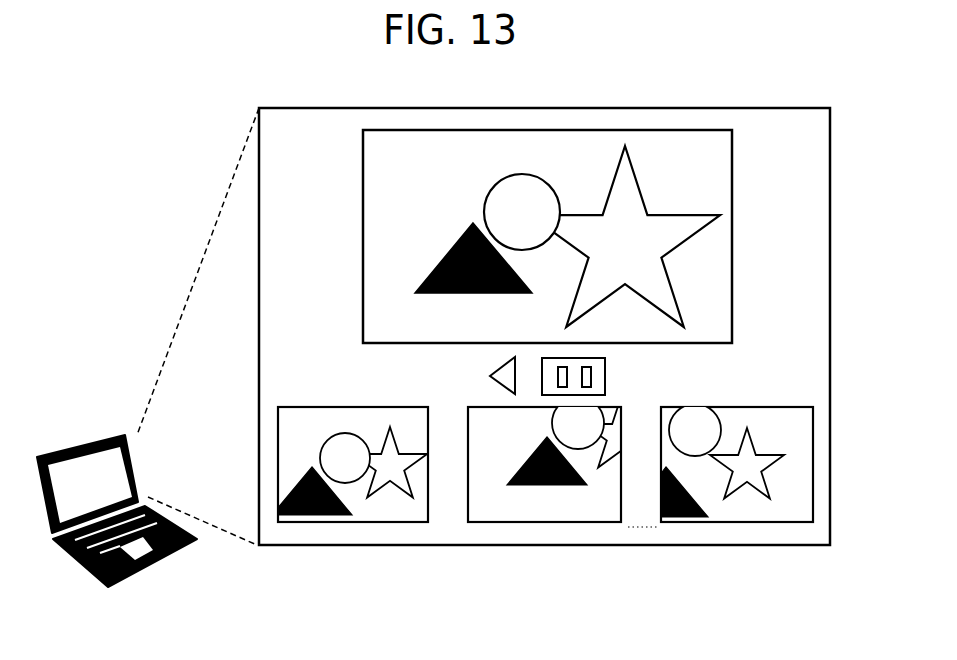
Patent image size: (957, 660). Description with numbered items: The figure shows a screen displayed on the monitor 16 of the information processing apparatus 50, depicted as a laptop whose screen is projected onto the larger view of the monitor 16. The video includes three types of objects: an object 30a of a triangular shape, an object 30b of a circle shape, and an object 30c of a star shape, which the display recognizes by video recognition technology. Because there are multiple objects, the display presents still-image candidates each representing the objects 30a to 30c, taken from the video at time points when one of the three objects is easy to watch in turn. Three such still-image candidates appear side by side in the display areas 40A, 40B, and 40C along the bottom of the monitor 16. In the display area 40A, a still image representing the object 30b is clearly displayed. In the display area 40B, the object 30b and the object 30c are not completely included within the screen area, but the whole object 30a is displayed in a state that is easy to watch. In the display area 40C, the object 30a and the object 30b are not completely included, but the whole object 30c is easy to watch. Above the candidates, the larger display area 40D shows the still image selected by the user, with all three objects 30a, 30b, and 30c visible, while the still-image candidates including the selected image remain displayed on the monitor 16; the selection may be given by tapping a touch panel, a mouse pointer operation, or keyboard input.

The monitor 16 is at (832, 120).
The information processing apparatus 50 is at (120, 437).
The object of a triangular shape 30a is at (432, 273).
The object of a circle shape 30b is at (486, 196).
The object of a star shape 30c is at (639, 190).
The display area 40A is at (370, 522).
The display area 40B is at (558, 522).
The display area 40C is at (755, 522).
The display area 40D is at (732, 187).